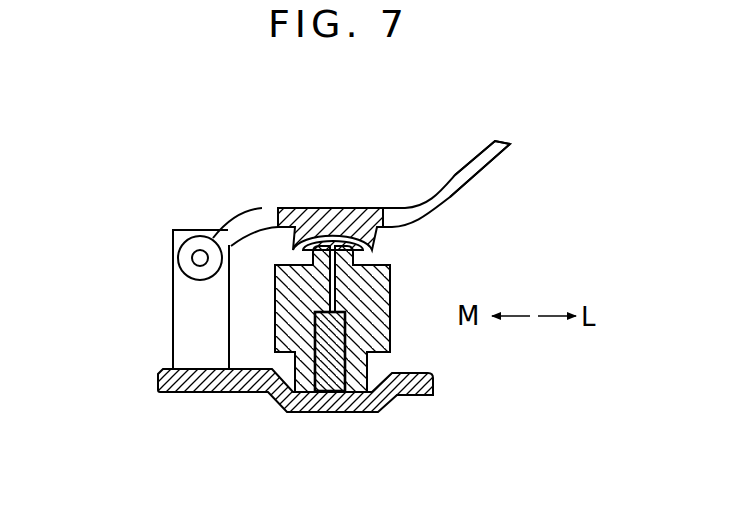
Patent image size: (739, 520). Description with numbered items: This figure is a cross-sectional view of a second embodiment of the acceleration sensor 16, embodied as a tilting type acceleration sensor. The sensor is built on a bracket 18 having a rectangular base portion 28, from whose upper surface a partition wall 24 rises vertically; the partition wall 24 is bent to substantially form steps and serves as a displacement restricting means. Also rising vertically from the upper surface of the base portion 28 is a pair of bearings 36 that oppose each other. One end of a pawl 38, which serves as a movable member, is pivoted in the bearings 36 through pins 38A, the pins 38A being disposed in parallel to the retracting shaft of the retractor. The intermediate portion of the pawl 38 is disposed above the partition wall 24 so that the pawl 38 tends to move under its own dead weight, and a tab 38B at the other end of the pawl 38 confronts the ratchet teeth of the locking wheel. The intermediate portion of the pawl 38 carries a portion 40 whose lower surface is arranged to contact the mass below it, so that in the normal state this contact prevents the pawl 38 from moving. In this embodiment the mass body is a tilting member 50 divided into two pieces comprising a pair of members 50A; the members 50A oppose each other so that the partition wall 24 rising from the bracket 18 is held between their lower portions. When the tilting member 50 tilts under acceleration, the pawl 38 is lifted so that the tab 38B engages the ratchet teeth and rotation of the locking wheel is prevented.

The acceleration sensor 16 is at (147, 261).
The bracket 18 is at (440, 385).
The partition wall 24 is at (303, 353).
The base portion 28 is at (422, 395).
The bearings 36 is at (183, 343).
The pawl 38 is at (394, 190).
The pins 38A is at (200, 257).
The tab 38B is at (500, 150).
The portion having a lower surface 40 is at (376, 247).
The tilting member 50 is at (288, 319).
The members 50A is at (283, 301).